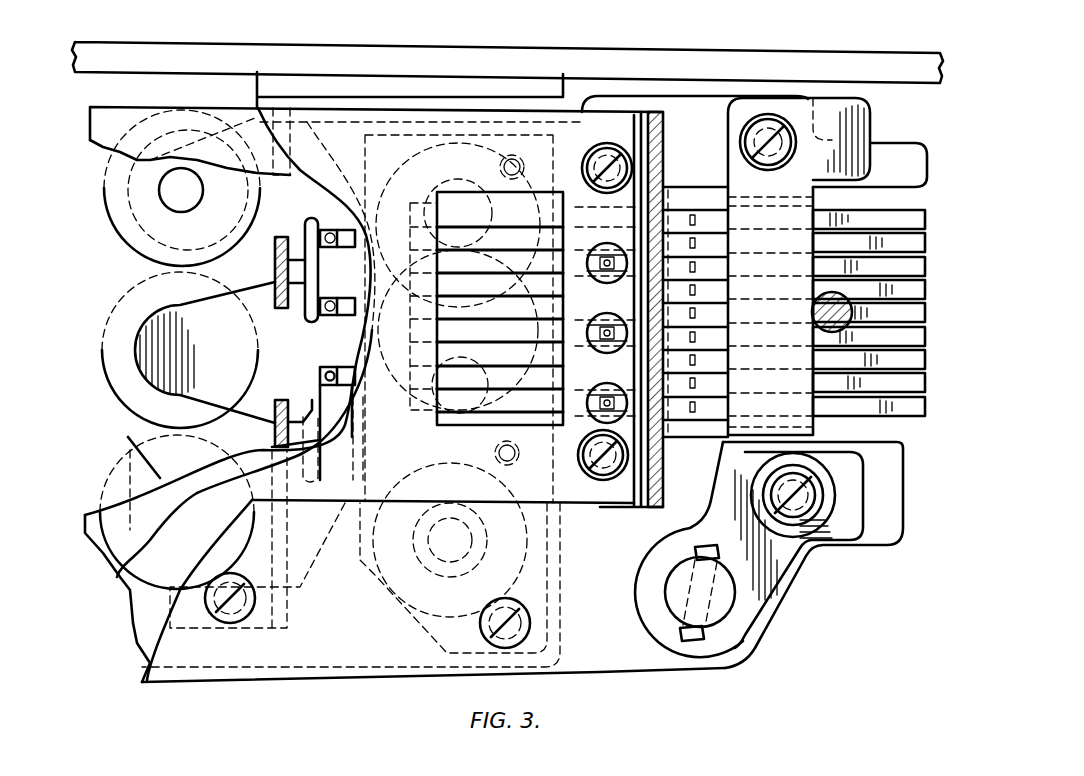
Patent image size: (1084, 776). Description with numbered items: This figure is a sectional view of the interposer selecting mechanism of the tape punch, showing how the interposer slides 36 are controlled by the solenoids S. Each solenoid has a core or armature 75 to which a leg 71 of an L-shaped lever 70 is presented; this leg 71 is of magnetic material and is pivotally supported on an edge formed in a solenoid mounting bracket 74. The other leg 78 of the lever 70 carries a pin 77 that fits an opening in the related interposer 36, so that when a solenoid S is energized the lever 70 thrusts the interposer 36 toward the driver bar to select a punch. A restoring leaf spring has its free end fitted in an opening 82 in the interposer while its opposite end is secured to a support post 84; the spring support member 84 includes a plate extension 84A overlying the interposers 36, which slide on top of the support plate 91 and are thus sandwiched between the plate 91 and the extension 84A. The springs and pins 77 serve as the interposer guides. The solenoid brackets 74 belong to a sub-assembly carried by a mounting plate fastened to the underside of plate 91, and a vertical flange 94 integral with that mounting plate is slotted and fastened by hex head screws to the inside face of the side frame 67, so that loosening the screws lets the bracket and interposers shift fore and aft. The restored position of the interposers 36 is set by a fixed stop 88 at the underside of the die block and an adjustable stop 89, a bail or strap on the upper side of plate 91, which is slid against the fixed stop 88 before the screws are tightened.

The vertical flange 94 is at (482, 75).
The side frame 67 is at (770, 82).
The support post 84 is at (664, 140).
The plate extension 84A is at (598, 506).
The interposer slide 36 is at (437, 407).
The fixed stop 88 is at (852, 312).
The opening 82 is at (692, 420).
The adjustable stop 89 is at (782, 570).
The support plate 91 is at (648, 665).
The core or armature 75 is at (196, 206).
The leg 71 is at (165, 392).
The solenoid mounting bracket 74 is at (278, 310).
The lever 70 is at (330, 266).
The leg 78 is at (347, 370).
The pin 77 is at (318, 377).
The solenoid S is at (128, 247).